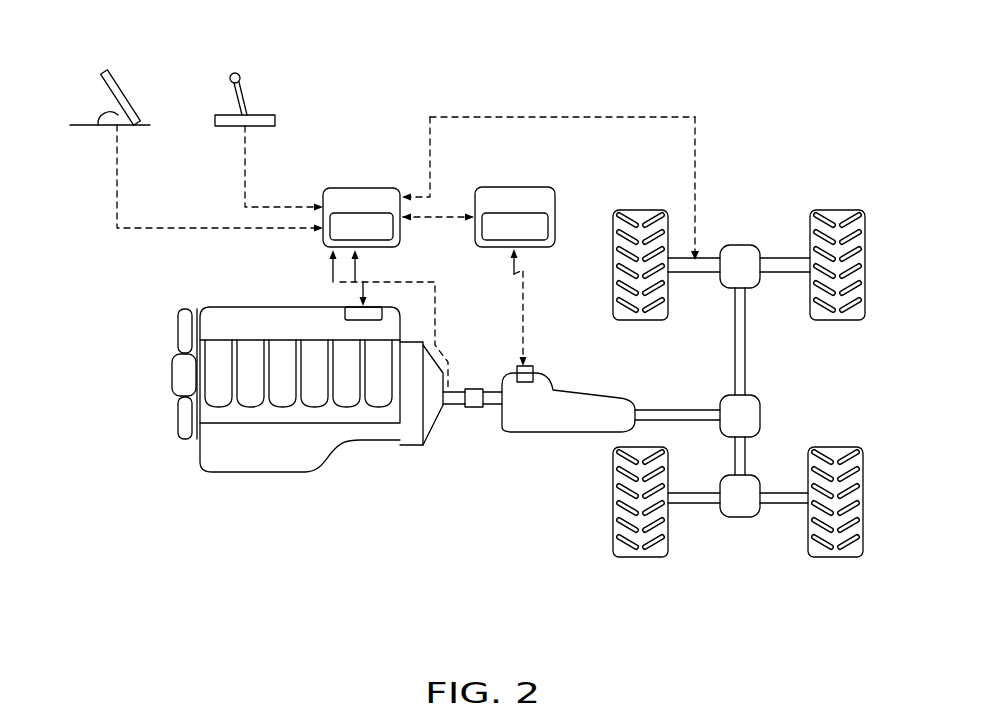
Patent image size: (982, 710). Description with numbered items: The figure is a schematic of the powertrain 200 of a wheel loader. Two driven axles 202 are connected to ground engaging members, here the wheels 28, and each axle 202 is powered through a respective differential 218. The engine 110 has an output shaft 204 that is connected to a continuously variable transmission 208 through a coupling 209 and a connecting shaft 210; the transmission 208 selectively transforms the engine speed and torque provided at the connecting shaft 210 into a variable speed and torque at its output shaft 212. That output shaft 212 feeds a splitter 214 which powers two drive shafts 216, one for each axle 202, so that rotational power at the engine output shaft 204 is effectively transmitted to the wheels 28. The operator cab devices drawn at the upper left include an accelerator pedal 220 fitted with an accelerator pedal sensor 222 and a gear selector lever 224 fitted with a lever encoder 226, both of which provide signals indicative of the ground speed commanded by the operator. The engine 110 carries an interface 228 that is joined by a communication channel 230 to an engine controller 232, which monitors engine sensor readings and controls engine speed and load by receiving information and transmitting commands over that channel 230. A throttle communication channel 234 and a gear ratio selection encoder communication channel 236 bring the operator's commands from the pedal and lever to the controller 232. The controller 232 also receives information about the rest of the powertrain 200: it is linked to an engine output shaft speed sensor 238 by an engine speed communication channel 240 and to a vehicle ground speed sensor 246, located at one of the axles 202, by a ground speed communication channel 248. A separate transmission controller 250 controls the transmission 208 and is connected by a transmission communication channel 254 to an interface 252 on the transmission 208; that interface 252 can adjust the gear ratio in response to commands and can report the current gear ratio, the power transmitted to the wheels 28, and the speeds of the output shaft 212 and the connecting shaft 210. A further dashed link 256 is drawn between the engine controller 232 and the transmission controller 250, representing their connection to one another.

The engine 110 is at (218, 323).
The powertrain 200 is at (503, 96).
The axle 202 is at (783, 265).
The output shaft 204 is at (443, 410).
The continuously variable transmission 208 is at (630, 377).
The coupling 209 is at (470, 390).
The connecting shaft 210 is at (493, 410).
The output shaft 212 is at (697, 387).
The splitter 214 is at (750, 407).
The drive shaft 216 is at (748, 367).
The differential 218 is at (738, 245).
The accelerator pedal 220 is at (110, 75).
The accelerator pedal sensor 222 is at (100, 107).
The gear selector lever 224 is at (240, 73).
The lever encoder 226 is at (263, 127).
The interface 228 is at (345, 310).
The communication channel 230 is at (333, 283).
The engine controller 232 is at (347, 194).
The throttle communication channel 234 is at (117, 173).
The gear ratio selection encoder communication channel 236 is at (247, 162).
The engine output shaft speed sensor 238 is at (413, 447).
The engine speed communication channel 240 is at (435, 312).
The vehicle ground speed sensor 246 is at (698, 255).
The ground speed communication channel 248 is at (588, 117).
The transmission controller 250 is at (545, 197).
The interface 252 is at (533, 372).
The transmission communication channel 254 is at (523, 310).
The communication bus 256 is at (433, 218).
The wheels 28 is at (636, 212).